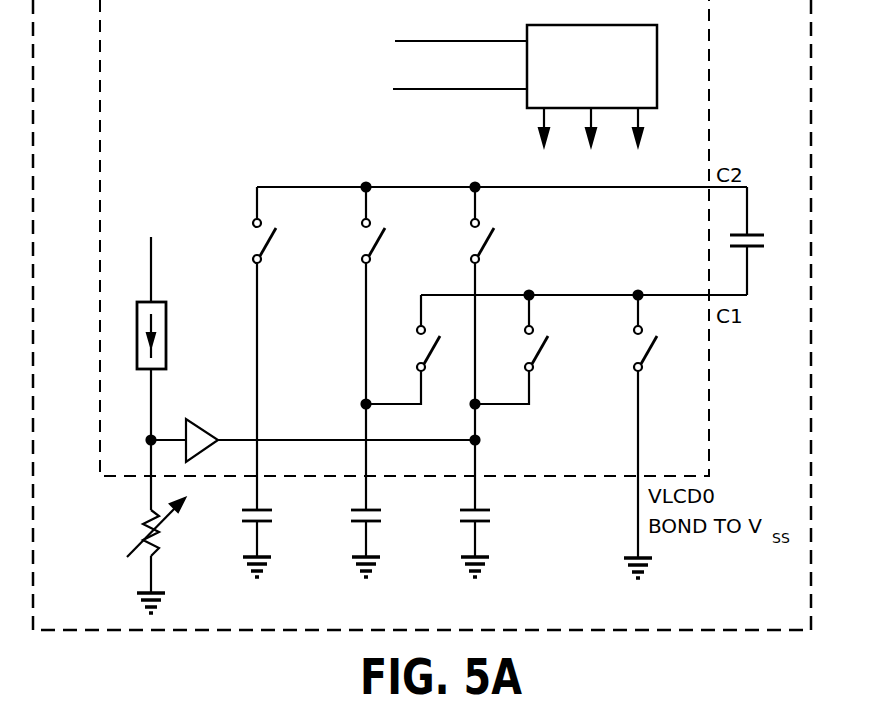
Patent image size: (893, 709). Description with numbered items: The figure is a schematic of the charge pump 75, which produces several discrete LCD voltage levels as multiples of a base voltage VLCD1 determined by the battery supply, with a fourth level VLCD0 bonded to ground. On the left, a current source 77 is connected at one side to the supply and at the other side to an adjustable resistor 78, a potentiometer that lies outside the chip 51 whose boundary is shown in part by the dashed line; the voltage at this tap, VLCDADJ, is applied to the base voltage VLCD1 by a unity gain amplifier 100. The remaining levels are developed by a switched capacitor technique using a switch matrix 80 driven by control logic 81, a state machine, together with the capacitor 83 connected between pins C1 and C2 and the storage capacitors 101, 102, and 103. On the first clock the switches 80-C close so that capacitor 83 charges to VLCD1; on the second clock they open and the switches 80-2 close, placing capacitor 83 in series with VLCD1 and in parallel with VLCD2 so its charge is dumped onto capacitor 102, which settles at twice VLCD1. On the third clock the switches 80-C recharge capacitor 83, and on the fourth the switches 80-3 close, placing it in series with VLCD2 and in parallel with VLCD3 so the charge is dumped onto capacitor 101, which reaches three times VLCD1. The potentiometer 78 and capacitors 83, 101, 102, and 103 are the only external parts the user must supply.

The chip 51 is at (712, 48).
The charge pump 75 is at (748, 618).
The current source 77 is at (166, 339).
The adjustable resistor (potentiometer) 78 is at (159, 556).
The switch matrix 80 is at (443, 218).
The switches 80-3 is at (268, 242).
The switches 80-2 is at (377, 242).
The switches 80-C is at (486, 242).
The control logic 81 is at (657, 96).
The capacitor 83 is at (752, 248).
The unity gain amplifier 100 is at (205, 429).
The capacitor 101 is at (263, 524).
The capacitor 102 is at (372, 524).
The capacitor 103 is at (481, 524).